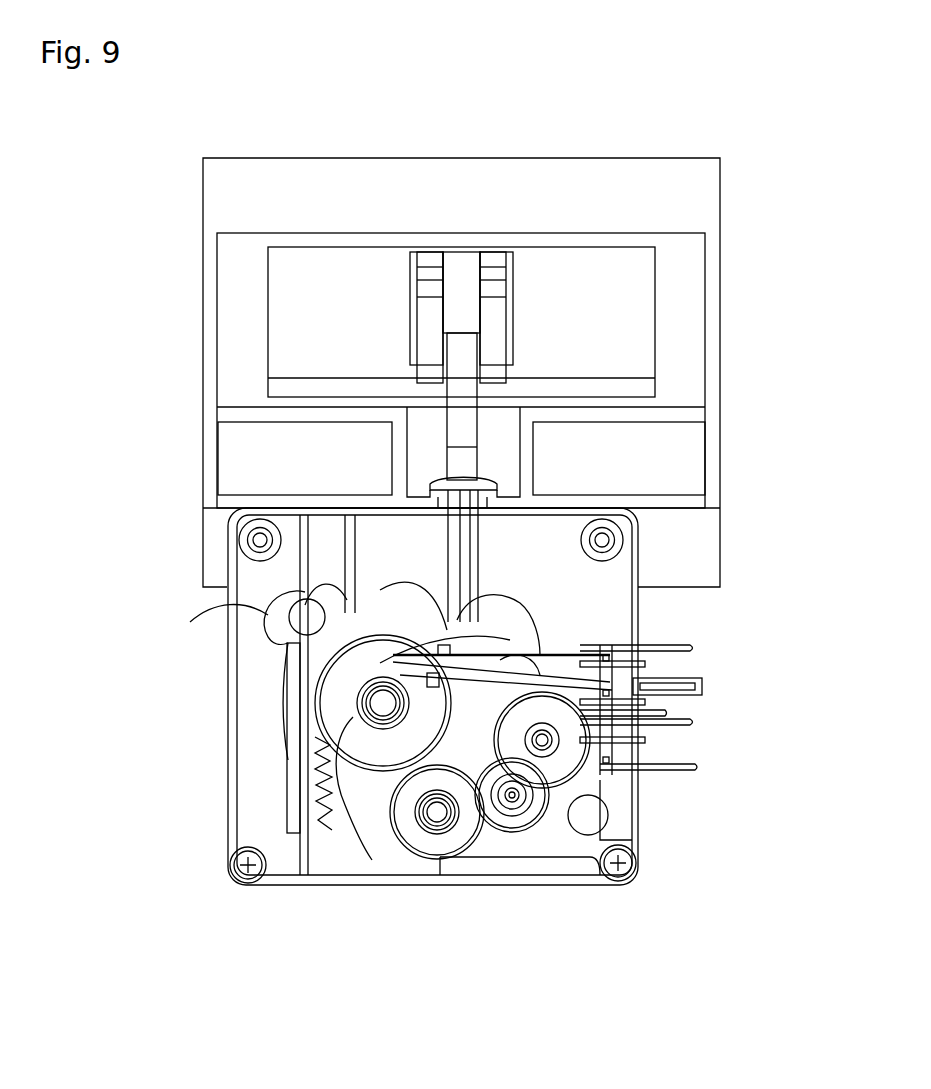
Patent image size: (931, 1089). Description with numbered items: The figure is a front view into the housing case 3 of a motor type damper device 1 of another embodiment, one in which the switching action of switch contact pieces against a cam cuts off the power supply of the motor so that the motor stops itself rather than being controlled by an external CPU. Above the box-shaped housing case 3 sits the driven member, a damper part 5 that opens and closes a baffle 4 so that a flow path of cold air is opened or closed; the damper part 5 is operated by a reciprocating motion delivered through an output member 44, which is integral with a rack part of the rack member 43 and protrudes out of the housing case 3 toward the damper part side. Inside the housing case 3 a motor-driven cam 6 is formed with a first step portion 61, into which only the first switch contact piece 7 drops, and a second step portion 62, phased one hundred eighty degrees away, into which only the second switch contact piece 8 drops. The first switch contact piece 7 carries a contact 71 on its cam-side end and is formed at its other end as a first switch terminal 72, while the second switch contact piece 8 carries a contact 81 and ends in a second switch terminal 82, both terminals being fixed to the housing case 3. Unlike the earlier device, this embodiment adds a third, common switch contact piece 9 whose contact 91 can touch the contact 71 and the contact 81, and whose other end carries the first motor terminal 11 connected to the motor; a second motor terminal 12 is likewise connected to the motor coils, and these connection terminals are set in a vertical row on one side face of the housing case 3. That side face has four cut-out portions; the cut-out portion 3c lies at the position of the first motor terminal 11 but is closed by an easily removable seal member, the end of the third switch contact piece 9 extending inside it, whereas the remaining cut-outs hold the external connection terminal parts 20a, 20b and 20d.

The motor type damper device 1 is at (137, 382).
The housing case 3 is at (226, 762).
The cut-out portion 3c is at (672, 698).
The baffle 4 is at (668, 204).
The damper part 5 is at (202, 227).
The cam 6 is at (372, 860).
The first switch contact piece 7 is at (548, 655).
The second switch contact piece 8 is at (562, 660).
The third switch contact piece 9 is at (562, 690).
The first motor terminal 11 is at (680, 672).
The second motor terminal 12 is at (640, 755).
The external connection terminal part 20a is at (663, 770).
The external connection terminal part 20b is at (693, 722).
The external connection terminal part 20d is at (672, 655).
The rack member 43 is at (292, 638).
The output member 44 is at (462, 533).
The first step portion 61 is at (352, 720).
The second step portion 62 is at (392, 730).
The contact 71 is at (453, 633).
The first switch terminal 72 is at (588, 646).
The contact 81 is at (538, 663).
The second switch terminal 82 is at (660, 712).
The contact 91 is at (478, 665).